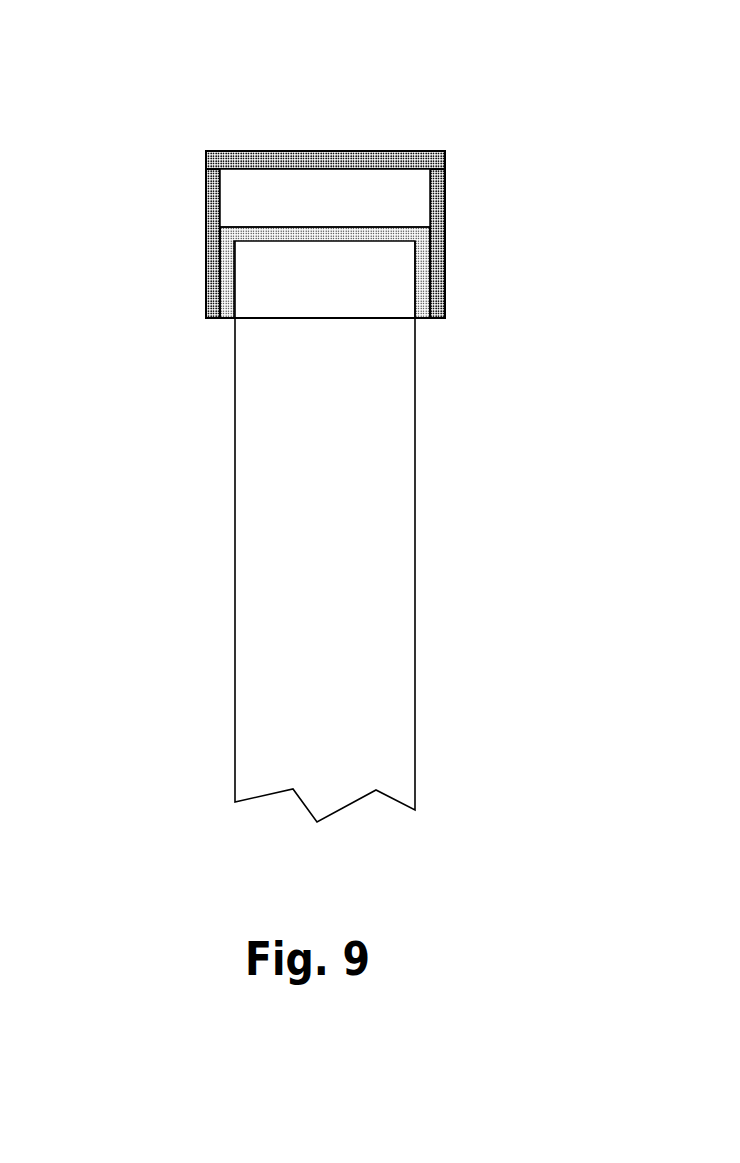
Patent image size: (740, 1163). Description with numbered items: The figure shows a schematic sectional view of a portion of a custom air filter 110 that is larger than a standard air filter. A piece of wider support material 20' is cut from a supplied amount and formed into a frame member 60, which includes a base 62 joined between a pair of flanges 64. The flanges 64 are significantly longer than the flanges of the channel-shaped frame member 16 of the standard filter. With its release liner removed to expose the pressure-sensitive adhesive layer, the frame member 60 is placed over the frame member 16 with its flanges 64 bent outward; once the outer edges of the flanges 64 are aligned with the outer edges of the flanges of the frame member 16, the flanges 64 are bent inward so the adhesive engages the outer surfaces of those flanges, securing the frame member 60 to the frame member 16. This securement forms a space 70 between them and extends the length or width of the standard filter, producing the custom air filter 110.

The assembly 20' is at (274, 160).
The housing 60 is at (461, 208).
The top wall 62 is at (318, 148).
The side walls 64 is at (204, 273).
The cavity 70 is at (367, 187).
The pipette tip holder 16 is at (265, 224).
The tube 110 is at (447, 525).